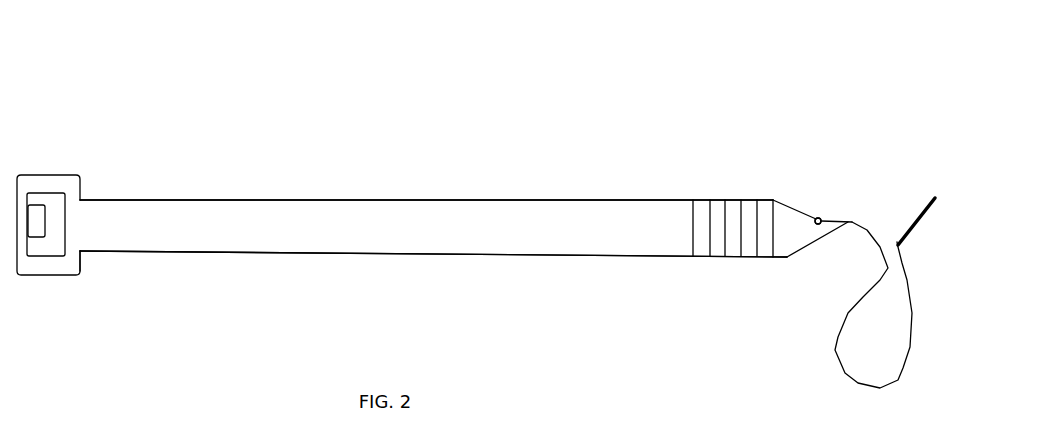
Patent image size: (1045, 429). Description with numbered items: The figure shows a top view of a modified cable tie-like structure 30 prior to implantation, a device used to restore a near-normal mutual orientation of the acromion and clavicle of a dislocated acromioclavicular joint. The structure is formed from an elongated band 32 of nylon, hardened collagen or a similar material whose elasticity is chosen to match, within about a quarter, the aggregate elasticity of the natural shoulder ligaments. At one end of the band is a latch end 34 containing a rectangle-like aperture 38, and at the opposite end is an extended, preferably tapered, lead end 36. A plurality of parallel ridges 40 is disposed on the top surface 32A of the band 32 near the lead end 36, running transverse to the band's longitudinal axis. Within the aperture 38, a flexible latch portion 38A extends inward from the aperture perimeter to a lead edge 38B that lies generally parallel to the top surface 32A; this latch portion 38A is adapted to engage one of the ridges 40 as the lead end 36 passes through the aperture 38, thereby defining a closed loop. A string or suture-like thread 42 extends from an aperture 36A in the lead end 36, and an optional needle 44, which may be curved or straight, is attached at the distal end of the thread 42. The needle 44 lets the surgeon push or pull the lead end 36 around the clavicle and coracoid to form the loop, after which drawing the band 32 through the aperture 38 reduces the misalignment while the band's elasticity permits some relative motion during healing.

The modified cable tie-like structure 30 is at (434, 50).
The elongated band 32 is at (262, 198).
The top surface of band 32A is at (586, 218).
The latch end 34 is at (32, 276).
The lead end 36 is at (817, 217).
The aperture of lead end 36A is at (818, 224).
The rectangle-like aperture 38 is at (57, 203).
The flexible latch portion 38A is at (33, 227).
The lead edge 38B is at (80, 250).
The parallel ridges 40 is at (778, 188).
The suture-like thread 42 is at (843, 371).
The needle 44 is at (907, 228).